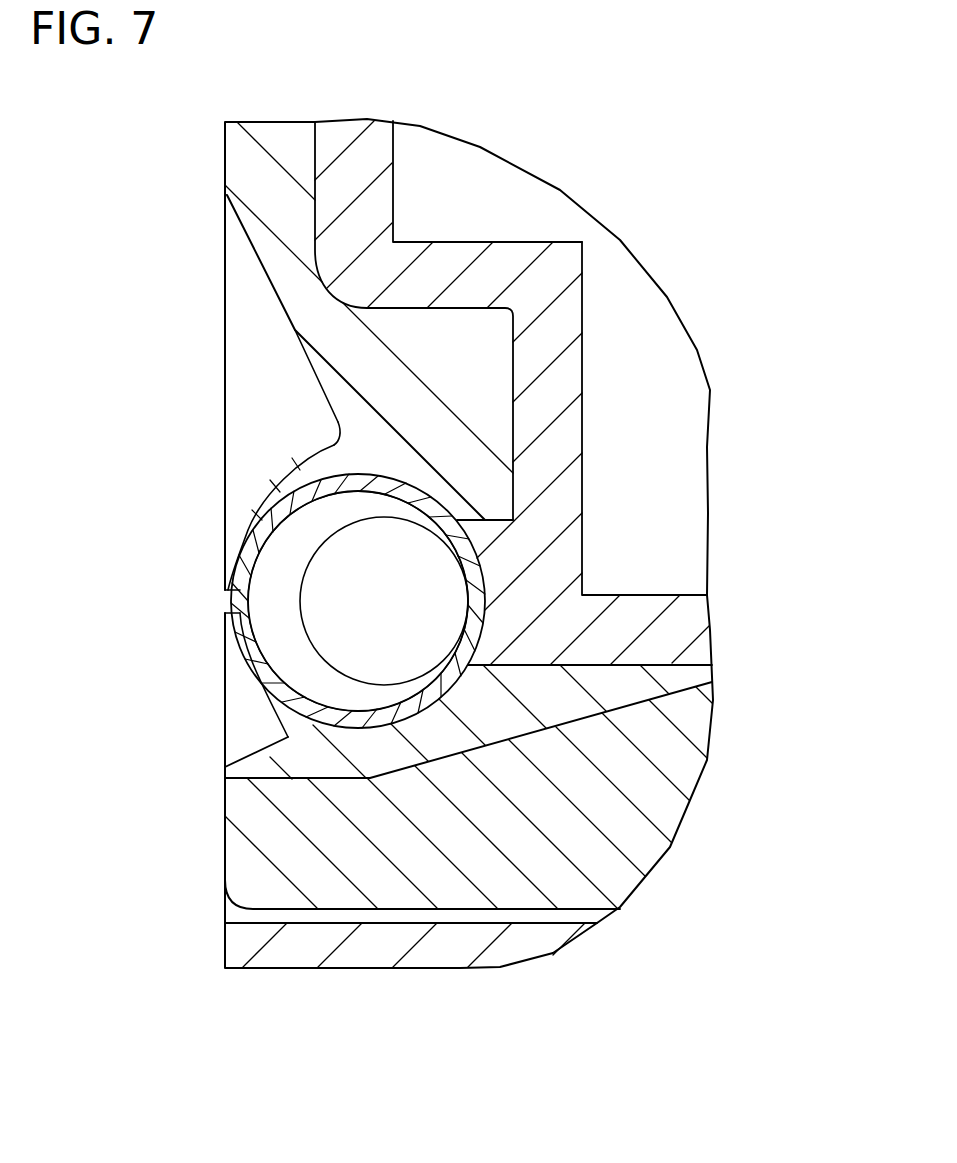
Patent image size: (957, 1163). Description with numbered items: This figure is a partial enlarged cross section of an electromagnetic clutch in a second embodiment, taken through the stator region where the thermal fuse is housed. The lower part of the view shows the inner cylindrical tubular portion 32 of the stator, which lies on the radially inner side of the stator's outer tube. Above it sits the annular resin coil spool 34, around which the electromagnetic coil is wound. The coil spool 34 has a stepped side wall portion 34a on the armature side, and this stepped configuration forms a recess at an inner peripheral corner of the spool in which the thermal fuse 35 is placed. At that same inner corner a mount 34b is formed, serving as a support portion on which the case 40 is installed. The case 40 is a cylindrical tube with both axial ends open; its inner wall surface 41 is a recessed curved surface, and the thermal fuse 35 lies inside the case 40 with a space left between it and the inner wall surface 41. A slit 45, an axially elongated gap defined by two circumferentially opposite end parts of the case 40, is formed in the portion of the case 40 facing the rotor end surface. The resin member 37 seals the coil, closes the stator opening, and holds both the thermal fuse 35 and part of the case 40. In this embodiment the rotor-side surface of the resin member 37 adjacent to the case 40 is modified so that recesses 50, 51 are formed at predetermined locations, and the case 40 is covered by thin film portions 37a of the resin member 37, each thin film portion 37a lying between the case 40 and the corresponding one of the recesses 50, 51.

The inner cylindrical tubular portion 32 is at (555, 865).
The coil spool 34 is at (599, 380).
The side wall portion 34a is at (377, 193).
The mount 34b is at (477, 537).
The thermal fuse 35 is at (403, 626).
The resin member 37 is at (258, 176).
The thin film portions 37a is at (300, 460).
The case 40 is at (277, 483).
The inner wall surface 41 is at (265, 556).
The slit 45 is at (233, 602).
The recess 50 is at (335, 430).
The recess 51 is at (287, 737).